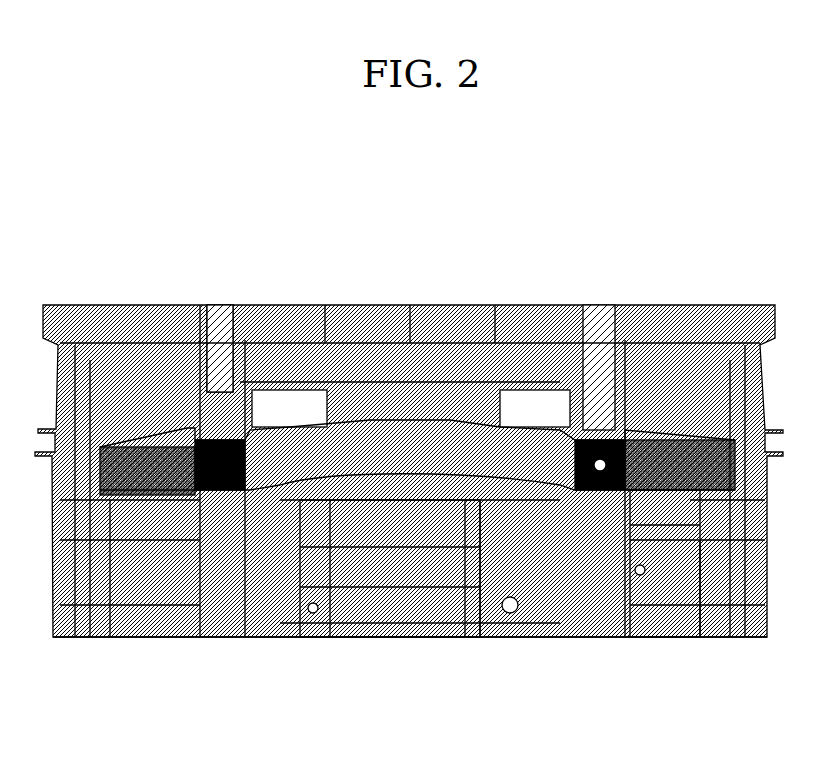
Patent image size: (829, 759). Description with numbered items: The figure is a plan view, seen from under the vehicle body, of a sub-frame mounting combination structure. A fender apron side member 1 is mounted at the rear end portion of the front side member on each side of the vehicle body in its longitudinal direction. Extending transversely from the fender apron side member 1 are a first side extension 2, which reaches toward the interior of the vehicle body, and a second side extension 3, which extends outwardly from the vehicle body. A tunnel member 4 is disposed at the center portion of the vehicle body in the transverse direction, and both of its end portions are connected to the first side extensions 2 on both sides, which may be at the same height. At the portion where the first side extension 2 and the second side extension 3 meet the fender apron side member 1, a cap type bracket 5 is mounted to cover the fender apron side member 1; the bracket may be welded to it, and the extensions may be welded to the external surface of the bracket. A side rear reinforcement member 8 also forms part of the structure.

The fender apron side member 1 is at (222, 582).
The first side extension 2 is at (552, 430).
The second side extension 3 is at (678, 457).
The tunnel member 4 is at (408, 475).
The cap type bracket 5 is at (593, 435).
The side rear reinforcement member 8 is at (658, 486).